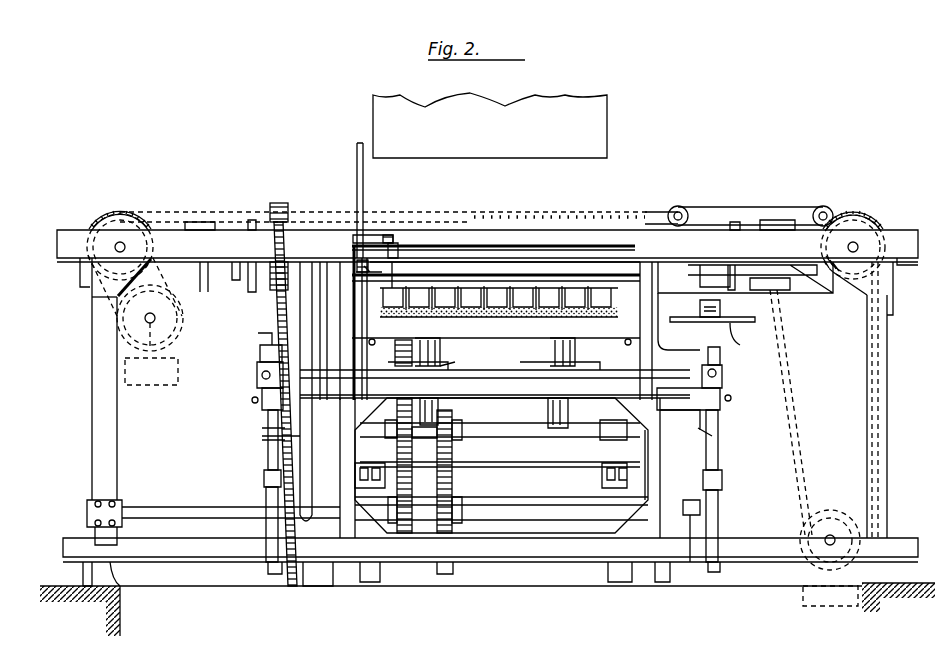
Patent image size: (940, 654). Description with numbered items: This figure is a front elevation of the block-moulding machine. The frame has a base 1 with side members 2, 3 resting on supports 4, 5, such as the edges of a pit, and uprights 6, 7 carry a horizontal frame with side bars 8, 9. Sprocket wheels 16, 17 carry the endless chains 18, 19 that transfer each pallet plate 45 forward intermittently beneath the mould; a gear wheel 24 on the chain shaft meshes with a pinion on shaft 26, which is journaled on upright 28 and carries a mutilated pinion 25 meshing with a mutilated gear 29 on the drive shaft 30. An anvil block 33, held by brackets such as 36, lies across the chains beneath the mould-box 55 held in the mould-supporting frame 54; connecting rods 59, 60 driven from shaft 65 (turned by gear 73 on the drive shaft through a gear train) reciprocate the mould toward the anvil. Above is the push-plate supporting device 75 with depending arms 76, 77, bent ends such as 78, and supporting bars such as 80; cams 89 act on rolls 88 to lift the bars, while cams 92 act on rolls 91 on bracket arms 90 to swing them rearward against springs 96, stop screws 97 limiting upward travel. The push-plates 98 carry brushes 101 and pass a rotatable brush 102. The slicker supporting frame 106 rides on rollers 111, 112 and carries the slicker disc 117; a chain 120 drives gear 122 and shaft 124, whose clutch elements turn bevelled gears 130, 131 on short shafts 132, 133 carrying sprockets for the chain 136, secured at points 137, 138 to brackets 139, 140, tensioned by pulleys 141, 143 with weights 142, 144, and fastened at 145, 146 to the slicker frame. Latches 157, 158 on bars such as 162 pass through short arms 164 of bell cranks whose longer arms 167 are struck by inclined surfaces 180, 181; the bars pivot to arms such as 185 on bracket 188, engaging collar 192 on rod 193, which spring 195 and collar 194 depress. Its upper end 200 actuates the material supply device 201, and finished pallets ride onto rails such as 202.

The base 1 is at (252, 552).
The side member 2 is at (132, 586).
The side member 3 is at (893, 570).
The support 4 is at (122, 624).
The support 5 is at (862, 623).
The upright 6 is at (495, 468).
The upright 7 is at (639, 452).
The side bar 8 is at (616, 362).
The side bar 9 is at (495, 323).
The sprocket wheel 16 is at (416, 440).
The sprocket wheel 17 is at (556, 344).
The endless chain 18 is at (440, 410).
The chain 19 is at (580, 430).
The gear wheel 24 is at (410, 343).
The mutilated pinion 25 is at (397, 446).
The shaft 26 is at (530, 434).
The upright 28 is at (92, 376).
The mutilated gear 29 is at (455, 485).
The drive shaft 30 is at (169, 507).
The anvil block 33 is at (520, 342).
The bracket 36 is at (427, 356).
The pallet plate 45 is at (508, 317).
The mould-supporting frame 54 is at (660, 323).
The mould-box 55 is at (495, 342).
The connecting rod 59 is at (262, 442).
The connecting rod 60 is at (700, 429).
The shaft 65 is at (486, 472).
The gear 73 is at (402, 540).
The push-plate supporting device 75 is at (508, 278).
The depending arm 76 is at (313, 312).
The depending arm 77 is at (662, 320).
The horizontal member 78 is at (265, 334).
The supporting bar 80 is at (260, 357).
The anti-friction roll 88 is at (688, 513).
The cam 89 is at (690, 562).
The bracket arm 90 is at (268, 458).
The anti-friction roll 91 is at (264, 477).
The cam 92 is at (266, 526).
The spring 96 is at (252, 401).
The stop screw 97 is at (257, 376).
The push-plate 98 is at (428, 307).
The brush 101 is at (612, 290).
The rotatable brush 102 is at (458, 307).
The slicker supporting frame 106 is at (812, 214).
The roller 111 is at (684, 207).
The roller 112 is at (828, 207).
The slicker disc 117 is at (732, 311).
The chain 120 is at (268, 424).
The gear 122 is at (287, 212).
The shaft 124 is at (498, 246).
The bevelled gear 130 is at (98, 222).
The bevelled gear 131 is at (866, 242).
The short shaft 132 is at (121, 242).
The short shaft 133 is at (862, 245).
The sprocket chain 136 is at (154, 222).
The securing point 137 is at (206, 284).
The securing point 138 is at (790, 290).
The bracket 139 is at (228, 270).
The bracket 140 is at (775, 267).
The pulley 141 is at (118, 322).
The weight 142 is at (149, 385).
The pulley 143 is at (831, 535).
The weight 144 is at (805, 606).
The securing point 145 is at (664, 210).
The securing point 146 is at (858, 210).
The actuating latch 157 is at (200, 222).
The actuating latch 158 is at (770, 222).
The bar 162 is at (700, 226).
The short arm 164 is at (255, 220).
The longer arm 167 is at (208, 286).
The inclined surface 180 is at (752, 280).
The inclined surface 181 is at (772, 312).
The upwardly extending arm 185 is at (400, 235).
The bracket 188 is at (410, 262).
The collar 192 is at (370, 243).
The rod 193 is at (327, 388).
The fixed collar 194 is at (382, 272).
The coiled spring 195 is at (357, 266).
The upper end of rod 200 is at (357, 153).
The material supply device 201 is at (490, 125).
The rail 202 is at (374, 342).